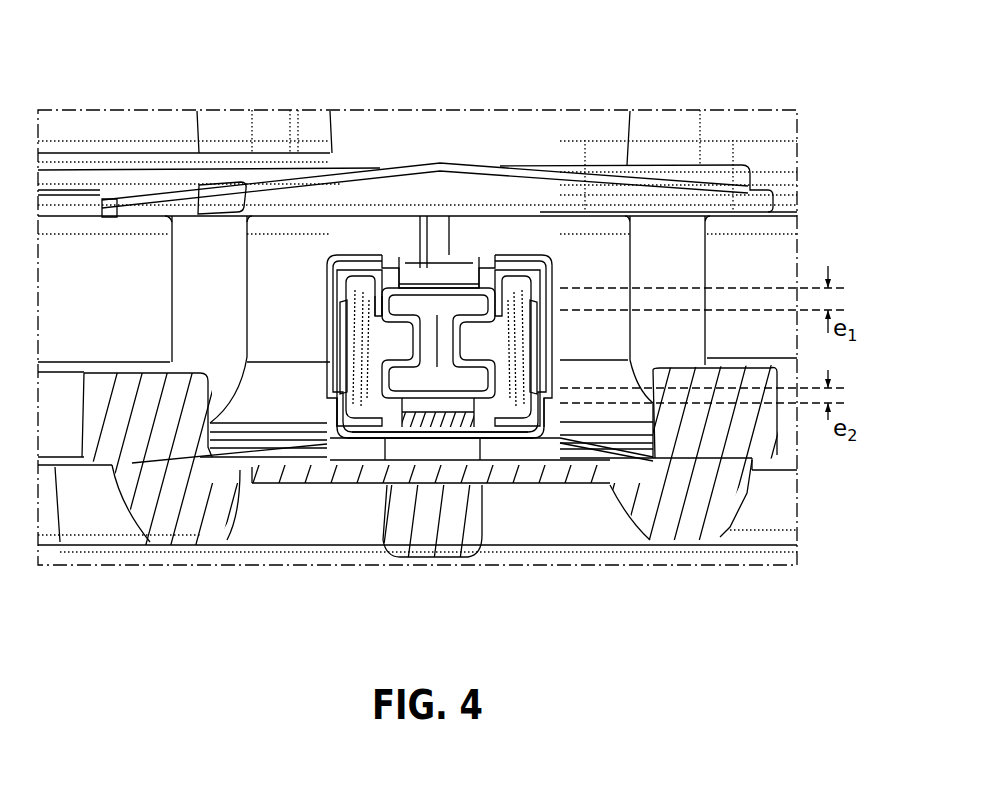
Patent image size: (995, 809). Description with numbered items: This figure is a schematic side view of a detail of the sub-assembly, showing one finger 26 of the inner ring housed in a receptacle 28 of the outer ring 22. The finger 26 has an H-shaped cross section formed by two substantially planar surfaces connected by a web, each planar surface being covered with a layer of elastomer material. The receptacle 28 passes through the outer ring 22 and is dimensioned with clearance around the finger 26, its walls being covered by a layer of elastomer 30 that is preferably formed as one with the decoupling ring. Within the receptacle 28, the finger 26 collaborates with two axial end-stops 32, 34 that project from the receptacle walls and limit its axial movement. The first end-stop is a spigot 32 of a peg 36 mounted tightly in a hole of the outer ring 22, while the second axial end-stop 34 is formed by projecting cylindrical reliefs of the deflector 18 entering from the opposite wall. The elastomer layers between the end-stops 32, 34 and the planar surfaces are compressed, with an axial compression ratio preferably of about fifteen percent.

The deflector 18 is at (760, 433).
The outer ring 22 is at (205, 253).
The finger 26 is at (508, 481).
The receptacle 28 is at (372, 330).
The layer of elastomer 30 is at (374, 316).
The spigot 32 is at (420, 270).
The second axial end-stop 34 is at (440, 422).
The peg 36 is at (681, 200).